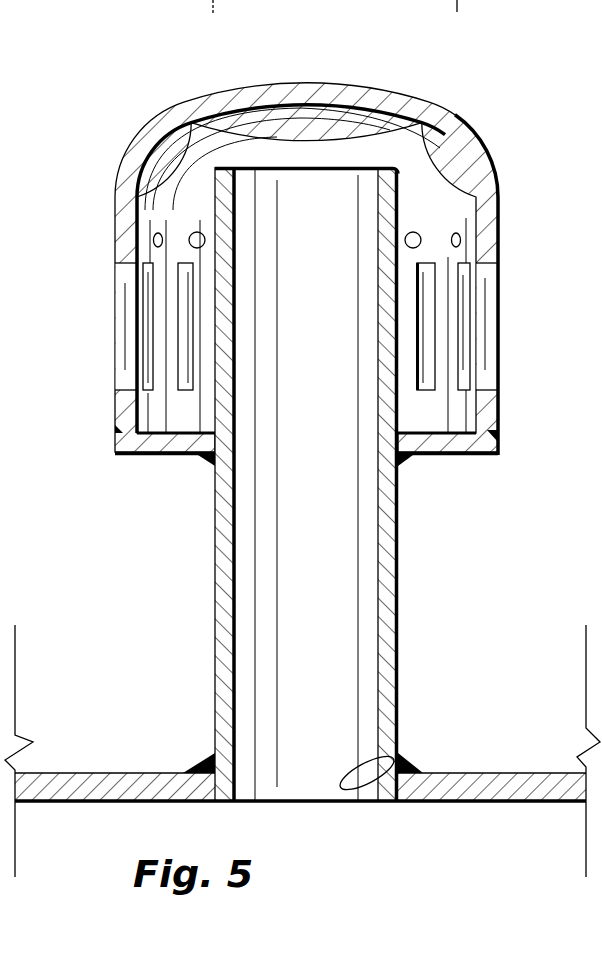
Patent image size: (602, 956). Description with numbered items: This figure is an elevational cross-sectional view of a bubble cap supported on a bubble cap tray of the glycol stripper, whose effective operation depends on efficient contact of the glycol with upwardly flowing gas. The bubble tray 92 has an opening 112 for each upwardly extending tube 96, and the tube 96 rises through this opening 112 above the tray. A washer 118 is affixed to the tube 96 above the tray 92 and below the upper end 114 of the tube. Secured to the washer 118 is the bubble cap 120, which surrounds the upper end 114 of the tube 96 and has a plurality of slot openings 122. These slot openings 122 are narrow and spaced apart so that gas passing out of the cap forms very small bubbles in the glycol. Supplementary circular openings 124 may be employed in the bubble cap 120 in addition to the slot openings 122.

The bubble tray 92 is at (502, 787).
The tube 96 is at (387, 613).
The opening 112 is at (395, 745).
The upper end of the tube 114 is at (390, 167).
The washer 118 is at (453, 446).
The bubble cap 120 is at (482, 257).
The slot openings 122 is at (430, 342).
The circular openings 124 is at (420, 233).